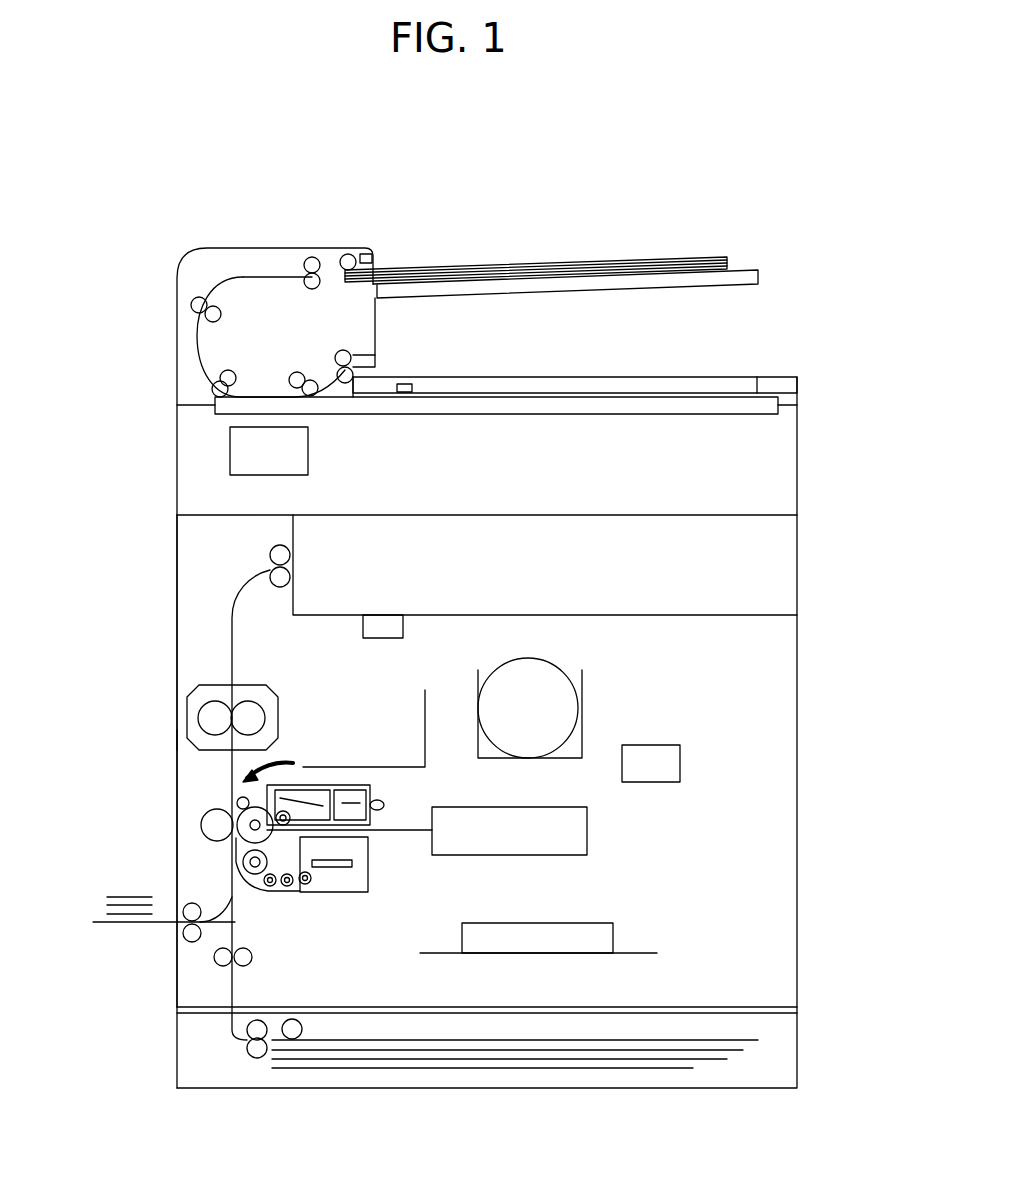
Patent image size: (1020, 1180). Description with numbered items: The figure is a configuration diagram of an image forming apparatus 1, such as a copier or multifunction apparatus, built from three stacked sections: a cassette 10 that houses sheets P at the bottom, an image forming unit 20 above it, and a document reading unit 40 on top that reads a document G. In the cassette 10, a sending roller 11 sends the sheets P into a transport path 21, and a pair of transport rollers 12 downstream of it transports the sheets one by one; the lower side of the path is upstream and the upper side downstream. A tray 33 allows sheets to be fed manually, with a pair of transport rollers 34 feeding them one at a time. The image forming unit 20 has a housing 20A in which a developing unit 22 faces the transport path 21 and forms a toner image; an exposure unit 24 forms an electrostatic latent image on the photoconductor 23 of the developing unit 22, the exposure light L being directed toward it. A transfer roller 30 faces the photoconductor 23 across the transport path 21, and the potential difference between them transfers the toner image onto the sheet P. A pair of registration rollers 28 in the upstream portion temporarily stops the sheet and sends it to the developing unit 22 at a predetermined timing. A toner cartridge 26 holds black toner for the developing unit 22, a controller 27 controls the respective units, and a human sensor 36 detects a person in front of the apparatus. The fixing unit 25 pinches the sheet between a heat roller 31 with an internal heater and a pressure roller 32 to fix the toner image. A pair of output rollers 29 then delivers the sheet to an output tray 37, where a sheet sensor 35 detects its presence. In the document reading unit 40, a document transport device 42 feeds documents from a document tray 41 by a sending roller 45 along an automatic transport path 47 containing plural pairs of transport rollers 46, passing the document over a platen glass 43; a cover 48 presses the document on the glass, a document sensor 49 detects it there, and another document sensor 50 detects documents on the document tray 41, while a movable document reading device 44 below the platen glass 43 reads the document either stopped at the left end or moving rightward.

The image forming apparatus 1 is at (543, 139).
The cassette 10 is at (177, 1050).
The sending roller 11 is at (302, 1025).
The pair of transport rollers 12 is at (247, 1035).
The image forming unit 20 is at (98, 517).
The housing 20A is at (177, 545).
The transport path 21 is at (230, 887).
The developing unit 22 is at (352, 892).
The photoconductor 23 is at (236, 842).
The exposure unit 24 is at (527, 843).
The fixing unit 25 is at (185, 740).
The toner cartridge 26 is at (567, 668).
The controller 27 is at (528, 954).
The pair of registration rollers 28 is at (253, 957).
The pair of output rollers 29 is at (272, 552).
The transfer roller 30 is at (203, 822).
The heat roller 31 is at (265, 700).
The pressure roller 32 is at (212, 700).
The tray 33 is at (153, 925).
The pair of transport rollers 34 is at (192, 943).
The sheet sensor 35 is at (396, 614).
The human sensor 36 is at (645, 744).
The output tray 37 is at (482, 613).
The document reading unit 40 is at (98, 263).
The document tray 41 is at (750, 270).
The document transport device 42 is at (207, 244).
The platen glass 43 is at (762, 377).
The document reading device 44 is at (310, 452).
The sending roller 45 is at (350, 253).
The pairs of transport rollers 46 is at (306, 258).
The automatic transport path 47 is at (195, 338).
The cover 48 is at (568, 377).
The document sensor 49 is at (407, 383).
The document sensor 50 is at (372, 256).
The document G is at (683, 256).
The laser light L is at (405, 830).
The sheet P is at (120, 925).